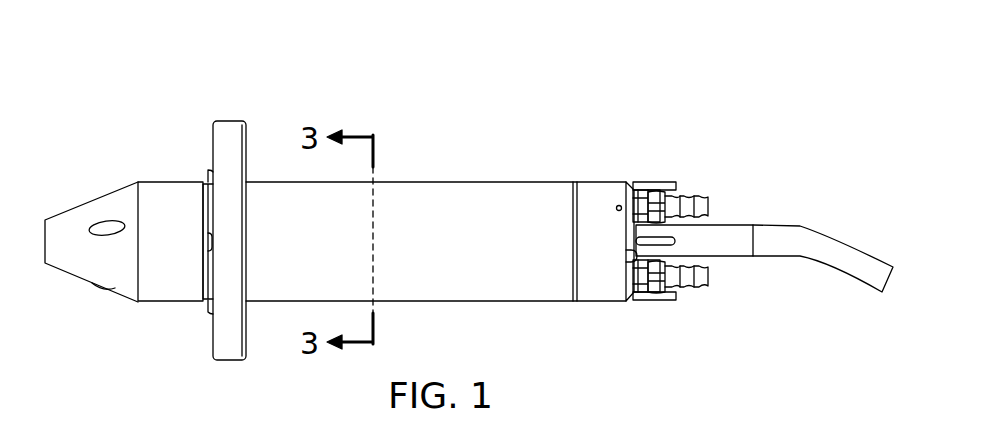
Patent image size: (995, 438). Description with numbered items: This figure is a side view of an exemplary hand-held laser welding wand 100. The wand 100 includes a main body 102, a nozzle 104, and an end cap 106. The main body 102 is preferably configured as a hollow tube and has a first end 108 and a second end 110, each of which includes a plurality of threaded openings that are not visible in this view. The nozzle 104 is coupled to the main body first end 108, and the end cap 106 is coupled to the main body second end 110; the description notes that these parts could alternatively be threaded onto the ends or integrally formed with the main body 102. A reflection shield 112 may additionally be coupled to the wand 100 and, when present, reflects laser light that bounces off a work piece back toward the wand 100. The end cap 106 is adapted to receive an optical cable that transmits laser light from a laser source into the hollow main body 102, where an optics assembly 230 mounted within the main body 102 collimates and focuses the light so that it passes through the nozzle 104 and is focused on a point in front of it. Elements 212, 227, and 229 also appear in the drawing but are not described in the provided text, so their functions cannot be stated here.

The hand-held laser welding wand 100 is at (513, 106).
The main body 102 is at (434, 181).
The nozzle 104 is at (120, 184).
The end cap 106 is at (608, 181).
The first end 108 is at (206, 182).
The second end 110 is at (573, 181).
The reflection shield 112 is at (238, 123).
The openings 212 is at (100, 222).
The fittings 227 is at (662, 181).
The barbed connectors 229 is at (710, 206).
The optics assembly 230 is at (818, 223).